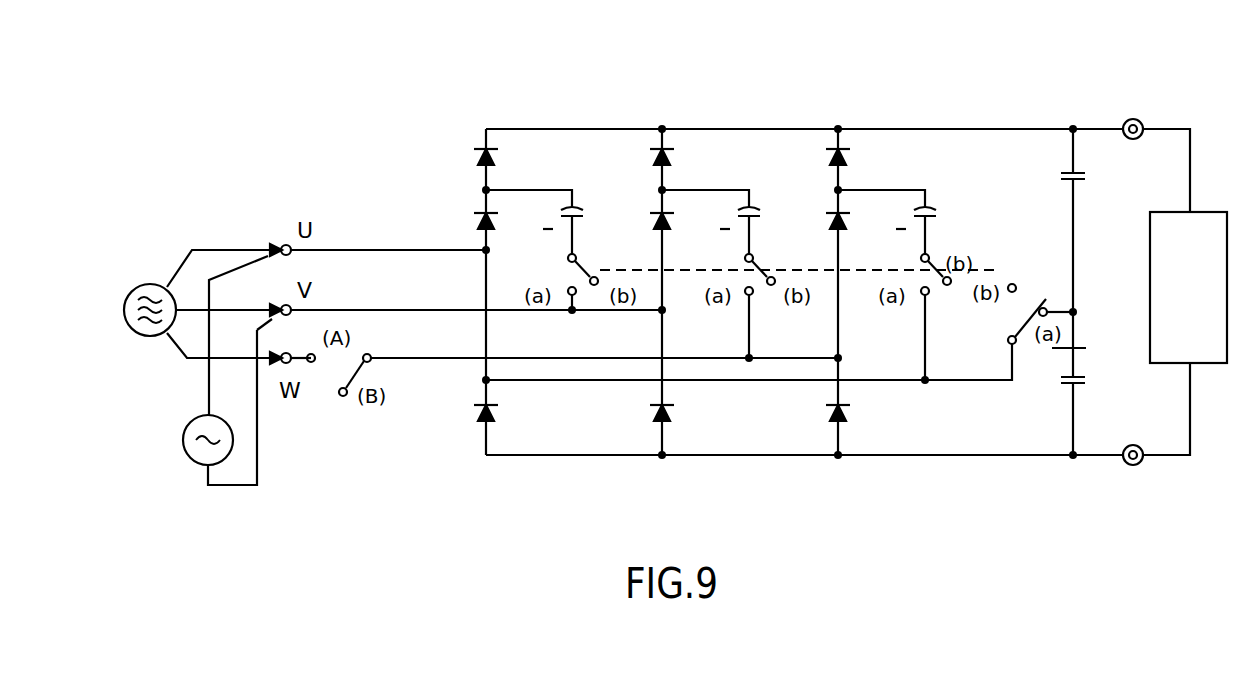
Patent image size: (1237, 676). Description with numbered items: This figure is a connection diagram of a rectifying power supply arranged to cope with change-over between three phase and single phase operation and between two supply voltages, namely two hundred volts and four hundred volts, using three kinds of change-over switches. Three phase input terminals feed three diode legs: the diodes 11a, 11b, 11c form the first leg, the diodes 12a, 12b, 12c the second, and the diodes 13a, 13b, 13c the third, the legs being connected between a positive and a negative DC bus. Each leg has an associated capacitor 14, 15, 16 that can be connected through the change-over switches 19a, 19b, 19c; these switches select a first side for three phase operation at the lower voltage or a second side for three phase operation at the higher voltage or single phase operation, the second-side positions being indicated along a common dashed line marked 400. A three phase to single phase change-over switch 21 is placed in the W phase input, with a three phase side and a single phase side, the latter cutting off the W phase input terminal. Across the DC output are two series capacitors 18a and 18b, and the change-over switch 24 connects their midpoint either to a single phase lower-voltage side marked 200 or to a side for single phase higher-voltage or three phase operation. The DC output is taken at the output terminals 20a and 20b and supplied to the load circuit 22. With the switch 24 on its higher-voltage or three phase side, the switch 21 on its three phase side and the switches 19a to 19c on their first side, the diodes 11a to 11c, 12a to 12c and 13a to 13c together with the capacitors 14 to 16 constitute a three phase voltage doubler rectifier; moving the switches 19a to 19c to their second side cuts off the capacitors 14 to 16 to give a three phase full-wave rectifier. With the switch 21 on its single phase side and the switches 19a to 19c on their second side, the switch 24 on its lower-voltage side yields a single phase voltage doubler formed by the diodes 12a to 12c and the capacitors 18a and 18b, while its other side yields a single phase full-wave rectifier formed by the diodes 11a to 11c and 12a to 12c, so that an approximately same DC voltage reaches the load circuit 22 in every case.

The diode 11a is at (478, 161).
The diode 11b is at (478, 222).
The diode 11c is at (478, 415).
The diode 12a is at (672, 160).
The diode 12b is at (670, 226).
The diode 12c is at (672, 410).
The diode 13a is at (848, 162).
The diode 13b is at (846, 226).
The diode 13c is at (848, 410).
The capacitor 14 is at (585, 216).
The capacitor 15 is at (762, 216).
The capacitor 16 is at (937, 216).
The capacitor 18a is at (1058, 178).
The capacitor 18b is at (1088, 383).
The change-over switch 19a is at (584, 293).
The change-over switch 19b is at (761, 295).
The change-over switch 19c is at (937, 295).
The output terminal 20a is at (1134, 118).
The output terminal 20b is at (1133, 465).
The three phase to single phase change-over switch 21 is at (330, 382).
The load circuit 22 is at (1200, 226).
The change-over switch 24 is at (1027, 336).
The 200 V position 200 is at (821, 311).
The 400 V position 400 is at (820, 263).